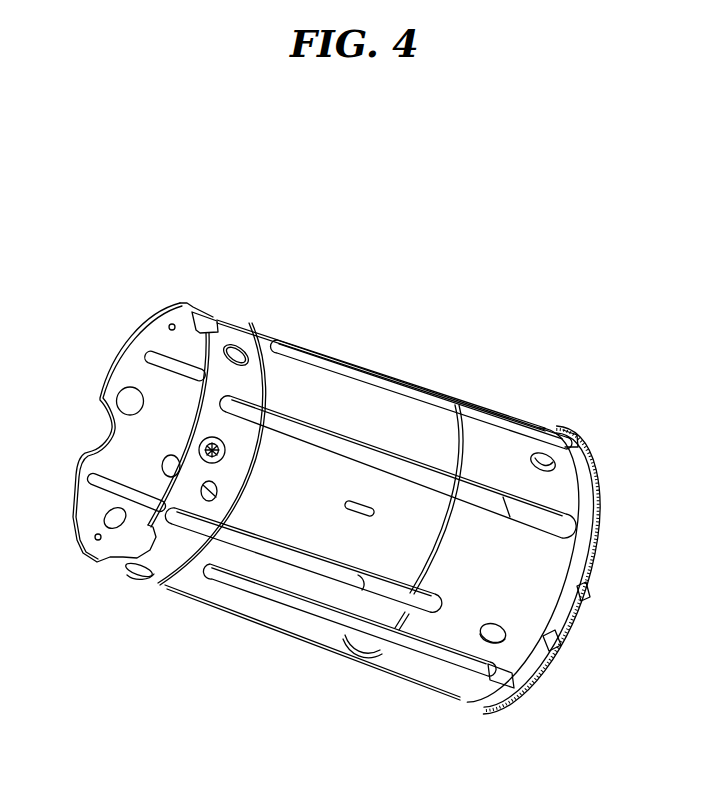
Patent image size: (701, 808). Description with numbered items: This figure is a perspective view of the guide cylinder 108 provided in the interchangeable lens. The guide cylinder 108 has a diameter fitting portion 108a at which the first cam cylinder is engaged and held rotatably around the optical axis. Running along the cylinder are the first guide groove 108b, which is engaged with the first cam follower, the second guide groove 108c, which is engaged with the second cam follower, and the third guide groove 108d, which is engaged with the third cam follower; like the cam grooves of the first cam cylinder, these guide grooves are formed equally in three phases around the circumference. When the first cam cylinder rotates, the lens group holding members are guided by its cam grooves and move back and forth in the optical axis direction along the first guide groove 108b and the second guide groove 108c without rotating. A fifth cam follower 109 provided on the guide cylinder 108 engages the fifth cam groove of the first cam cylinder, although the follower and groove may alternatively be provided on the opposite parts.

The guide cylinder 108 is at (483, 441).
The diameter fitting portion 108a is at (486, 420).
The first guide groove 108b is at (300, 430).
The second guide groove 108c is at (247, 542).
The third guide groove 108d is at (305, 595).
The fifth cam follower 109 is at (198, 446).